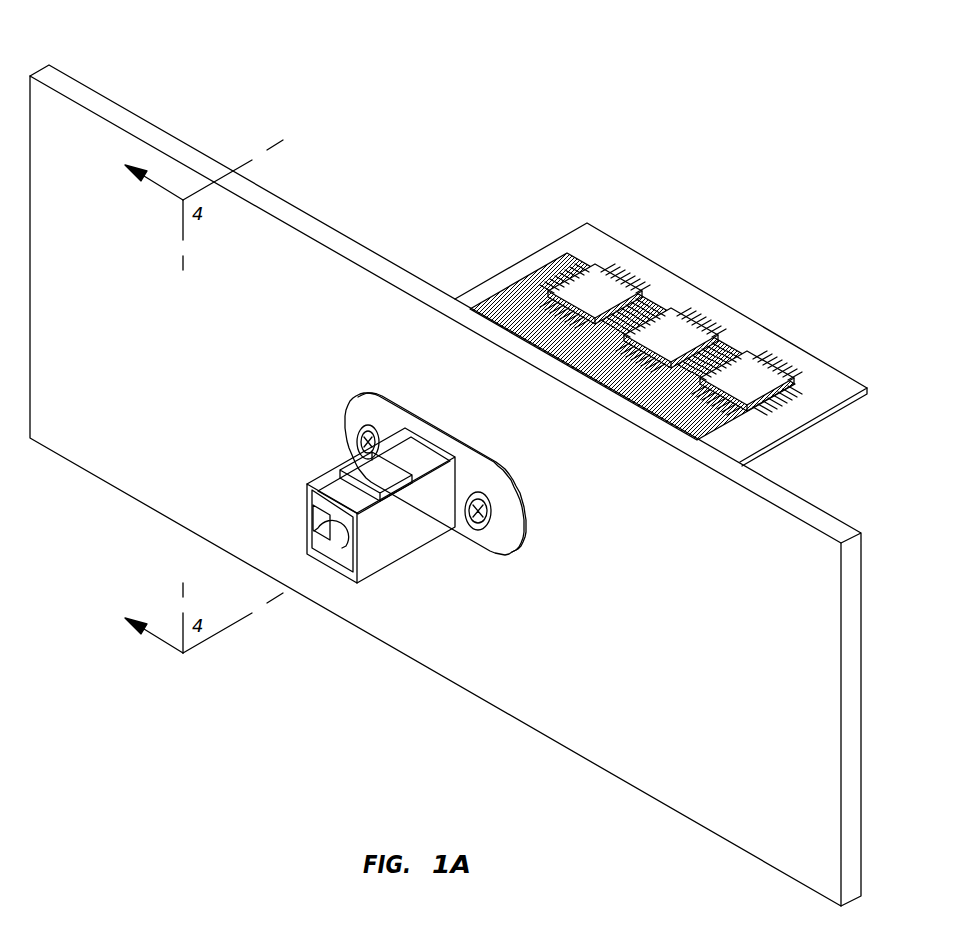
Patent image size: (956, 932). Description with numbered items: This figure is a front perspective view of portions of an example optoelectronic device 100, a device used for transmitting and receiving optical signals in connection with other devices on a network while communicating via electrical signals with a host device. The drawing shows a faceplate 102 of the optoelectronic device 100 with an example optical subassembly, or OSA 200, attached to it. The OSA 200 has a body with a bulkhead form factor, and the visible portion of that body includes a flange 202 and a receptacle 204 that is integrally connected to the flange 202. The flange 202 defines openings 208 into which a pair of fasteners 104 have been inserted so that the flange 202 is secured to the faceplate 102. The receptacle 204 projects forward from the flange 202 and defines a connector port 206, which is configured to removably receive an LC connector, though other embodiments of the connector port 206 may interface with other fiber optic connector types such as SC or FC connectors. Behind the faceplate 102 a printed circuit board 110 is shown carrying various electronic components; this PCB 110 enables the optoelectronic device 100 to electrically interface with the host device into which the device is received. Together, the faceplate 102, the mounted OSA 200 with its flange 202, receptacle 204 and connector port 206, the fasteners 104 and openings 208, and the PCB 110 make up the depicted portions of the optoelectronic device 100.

The optoelectronic device 100 is at (448, 468).
The faceplate 102 is at (785, 492).
The fasteners 104 is at (377, 420).
The printed circuit board 110 is at (706, 301).
The optical subassembly 200 is at (376, 523).
The flange 202 is at (512, 498).
The receptacle 204 is at (428, 546).
The connector port 206 is at (322, 523).
The openings 208 is at (358, 434).